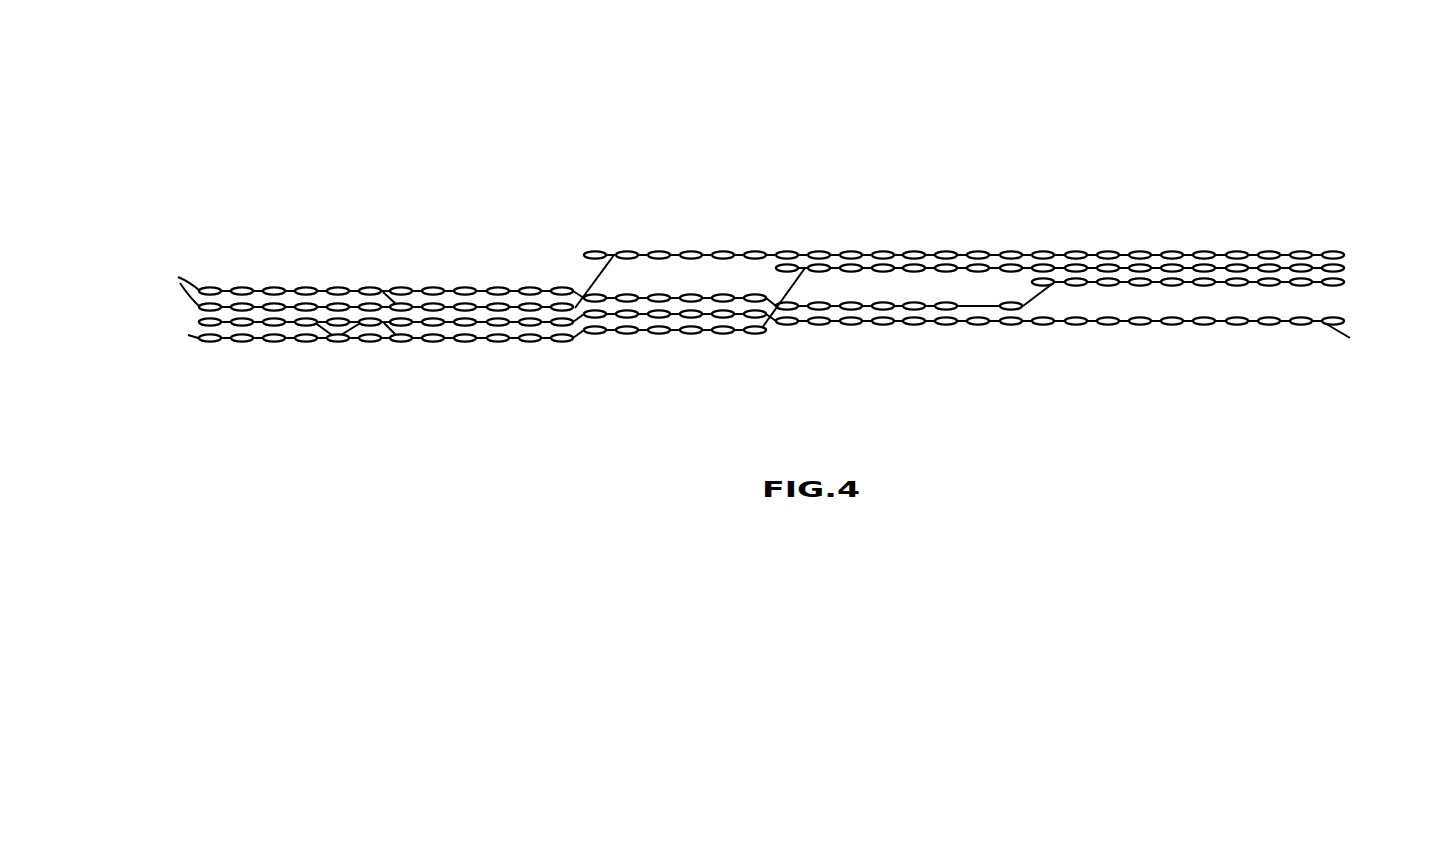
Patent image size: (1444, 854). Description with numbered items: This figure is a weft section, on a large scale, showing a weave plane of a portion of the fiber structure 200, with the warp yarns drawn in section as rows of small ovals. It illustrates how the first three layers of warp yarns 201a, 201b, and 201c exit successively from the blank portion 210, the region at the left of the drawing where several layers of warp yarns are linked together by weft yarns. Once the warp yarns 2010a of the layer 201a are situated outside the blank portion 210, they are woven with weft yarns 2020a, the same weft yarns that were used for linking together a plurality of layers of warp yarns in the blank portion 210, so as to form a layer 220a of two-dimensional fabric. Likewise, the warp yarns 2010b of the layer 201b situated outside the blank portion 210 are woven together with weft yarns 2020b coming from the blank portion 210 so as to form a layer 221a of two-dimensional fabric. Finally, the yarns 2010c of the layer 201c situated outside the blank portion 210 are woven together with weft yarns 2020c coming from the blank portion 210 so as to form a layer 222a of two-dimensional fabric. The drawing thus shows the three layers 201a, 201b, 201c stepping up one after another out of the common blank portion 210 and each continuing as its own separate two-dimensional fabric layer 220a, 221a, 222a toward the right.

The fiber structure 200 is at (885, 100).
The first layer of warp yarns 201a is at (182, 291).
The second layer of warp yarns 201b is at (182, 307).
The third layer of warp yarns 201c is at (182, 322).
The blank portion 210 is at (355, 371).
The warp yarns of the layer 201a 2010a is at (627, 254).
The warp yarns of the layer 201b 2010b is at (850, 252).
The warp yarns of the layer 201c 2010c is at (980, 303).
The weft yarns 2020a is at (606, 277).
The weft yarns 2020b is at (794, 290).
The weft yarns 2020c is at (1050, 287).
The layer of two-dimensional fabric 220a is at (943, 243).
The layer of two-dimensional fabric 221a is at (1192, 265).
The layer of two-dimensional fabric 222a is at (1269, 287).